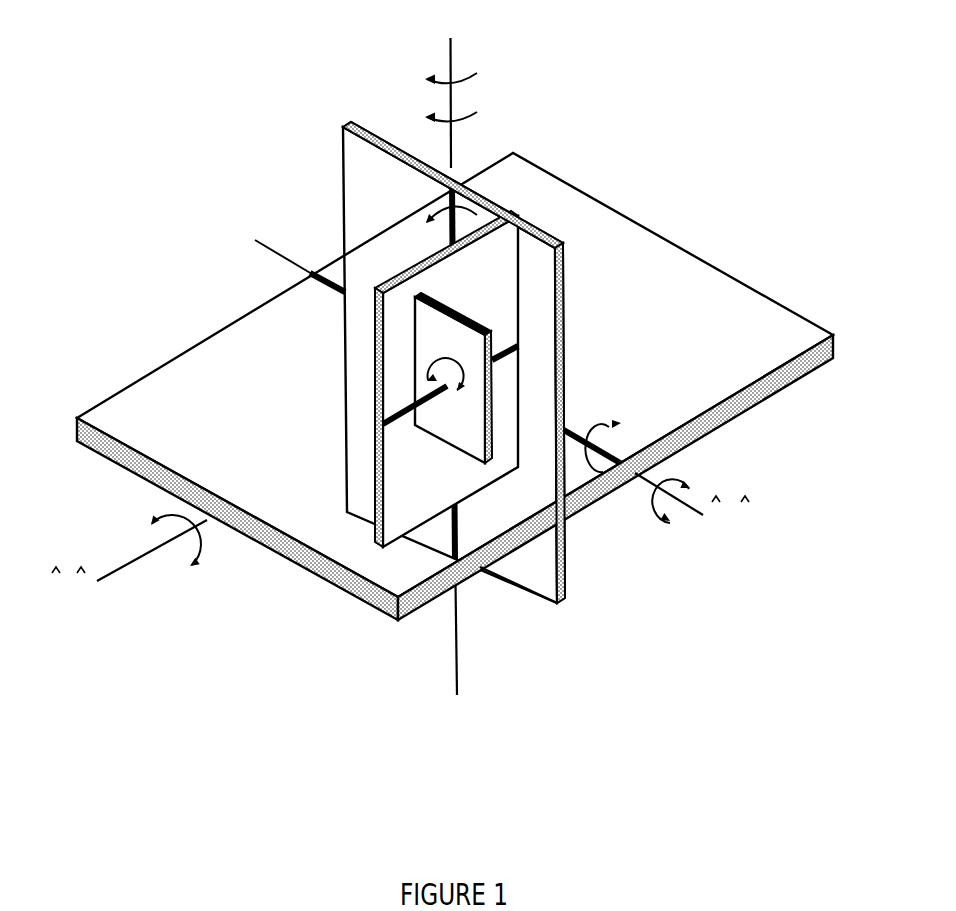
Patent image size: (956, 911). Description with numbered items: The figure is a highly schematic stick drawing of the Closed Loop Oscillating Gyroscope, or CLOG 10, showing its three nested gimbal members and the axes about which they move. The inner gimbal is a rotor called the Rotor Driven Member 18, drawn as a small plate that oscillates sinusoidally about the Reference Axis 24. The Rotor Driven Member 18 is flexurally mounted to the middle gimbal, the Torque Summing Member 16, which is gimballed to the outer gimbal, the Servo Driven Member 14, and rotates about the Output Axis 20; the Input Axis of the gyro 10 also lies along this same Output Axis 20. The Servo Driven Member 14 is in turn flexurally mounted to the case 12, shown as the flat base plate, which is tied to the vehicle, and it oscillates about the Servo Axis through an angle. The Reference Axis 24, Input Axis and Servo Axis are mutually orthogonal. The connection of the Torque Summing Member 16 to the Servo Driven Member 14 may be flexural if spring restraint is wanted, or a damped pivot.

The Closed Loop Oscillating Gyroscope 10 is at (463, 347).
The case 12 is at (807, 332).
The Servo Driven Member 14 is at (346, 126).
The Torque Summing Member 16 is at (518, 297).
The Rotor Driven Member 18 is at (450, 420).
The Output Axis 20 is at (447, 58).
The Reference Axis 24 is at (127, 575).